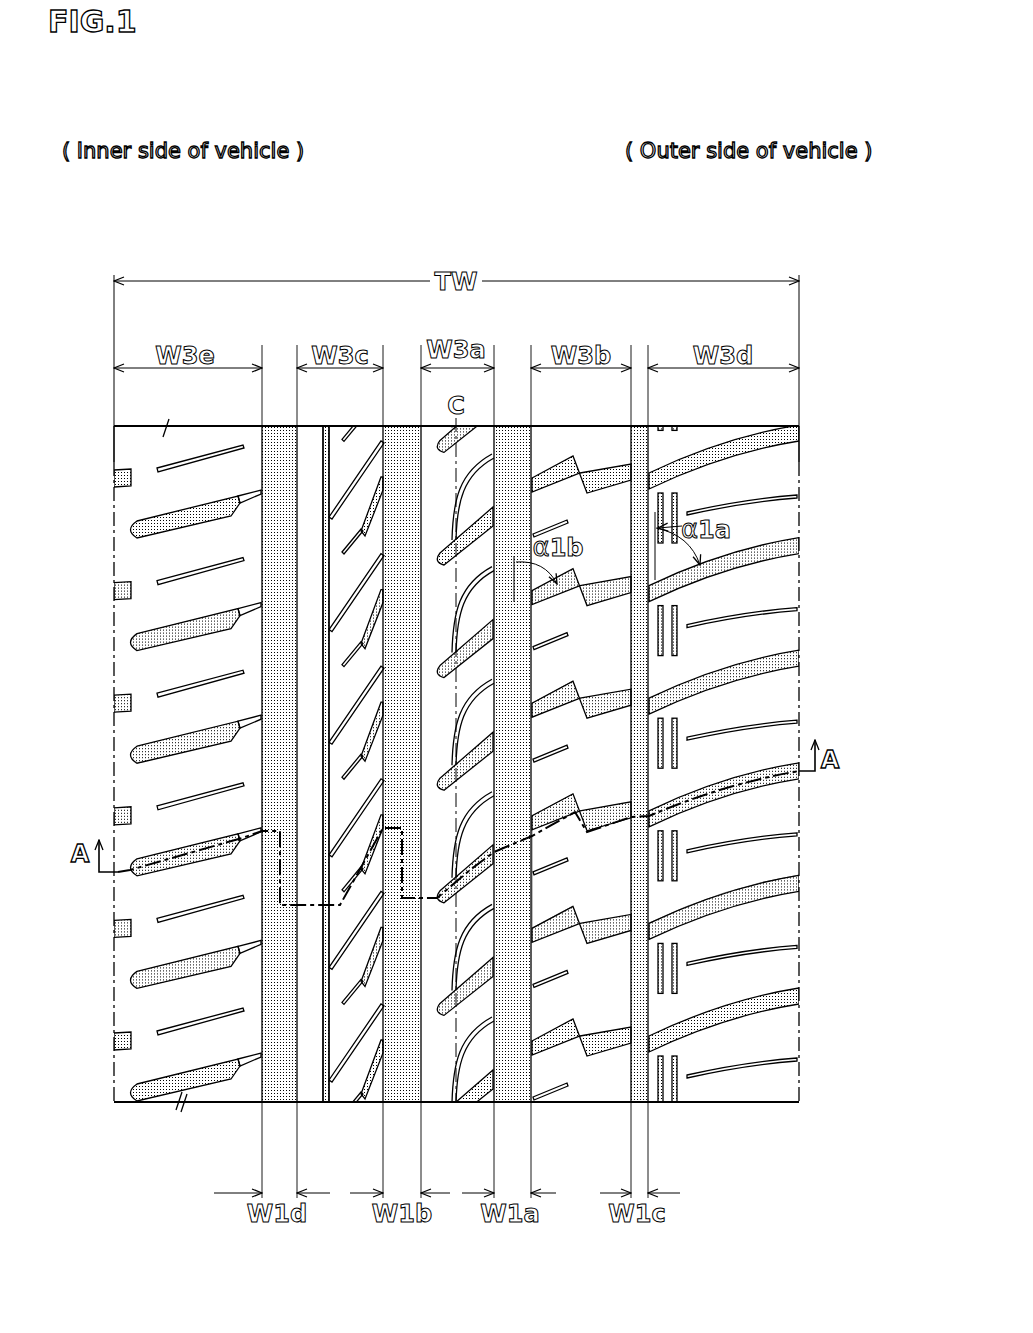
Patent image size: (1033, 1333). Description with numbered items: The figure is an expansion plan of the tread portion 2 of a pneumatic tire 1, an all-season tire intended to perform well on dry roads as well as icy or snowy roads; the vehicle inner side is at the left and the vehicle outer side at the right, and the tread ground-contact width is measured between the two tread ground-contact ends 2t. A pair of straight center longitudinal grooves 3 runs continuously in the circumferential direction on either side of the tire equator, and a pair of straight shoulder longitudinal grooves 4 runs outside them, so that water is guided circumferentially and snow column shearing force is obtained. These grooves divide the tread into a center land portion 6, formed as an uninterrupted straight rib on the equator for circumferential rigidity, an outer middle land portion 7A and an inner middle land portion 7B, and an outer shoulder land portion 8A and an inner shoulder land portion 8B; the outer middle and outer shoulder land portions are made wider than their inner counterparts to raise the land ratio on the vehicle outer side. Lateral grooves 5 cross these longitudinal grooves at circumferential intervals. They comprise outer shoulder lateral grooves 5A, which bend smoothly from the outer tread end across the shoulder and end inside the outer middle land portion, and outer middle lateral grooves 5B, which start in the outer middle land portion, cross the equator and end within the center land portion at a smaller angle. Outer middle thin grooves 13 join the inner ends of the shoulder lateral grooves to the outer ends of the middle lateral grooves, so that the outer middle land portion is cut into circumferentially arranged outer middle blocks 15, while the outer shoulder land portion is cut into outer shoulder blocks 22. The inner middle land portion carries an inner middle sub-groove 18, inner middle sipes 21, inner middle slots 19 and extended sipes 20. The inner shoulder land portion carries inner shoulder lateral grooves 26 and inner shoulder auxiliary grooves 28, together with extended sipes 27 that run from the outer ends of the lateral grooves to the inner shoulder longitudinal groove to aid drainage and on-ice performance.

The pneumatic tire 1 is at (775, 268).
The tread portion 2 is at (785, 358).
The tread ground-contact end 2t is at (111, 458).
The center longitudinal grooves 3 is at (405, 455).
The shoulder longitudinal grooves 4 is at (281, 455).
The lateral grooves 5 is at (543, 930).
The outer shoulder lateral grooves 5A is at (737, 552).
The outer middle lateral grooves 5B is at (572, 572).
The center land portion 6 is at (443, 1063).
The outer middle land portion 7A is at (605, 1063).
The inner middle land portion 7B is at (352, 1067).
The outer shoulder land portion 8A is at (712, 1045).
The inner shoulder land portion 8B is at (212, 1045).
The outer middle thin grooves 13 is at (592, 880).
The outer middle blocks 15 is at (598, 688).
The inner middle sub-groove 18 is at (321, 668).
The inner middle slots 19 is at (370, 727).
The extended sipes 20 is at (348, 773).
The inner middle sipes 21 is at (370, 582).
The outer shoulder blocks 22 is at (727, 483).
The inner shoulder lateral grooves 26 is at (183, 521).
The extended sipes 27 is at (250, 496).
The inner shoulder auxiliary grooves 28 is at (205, 572).